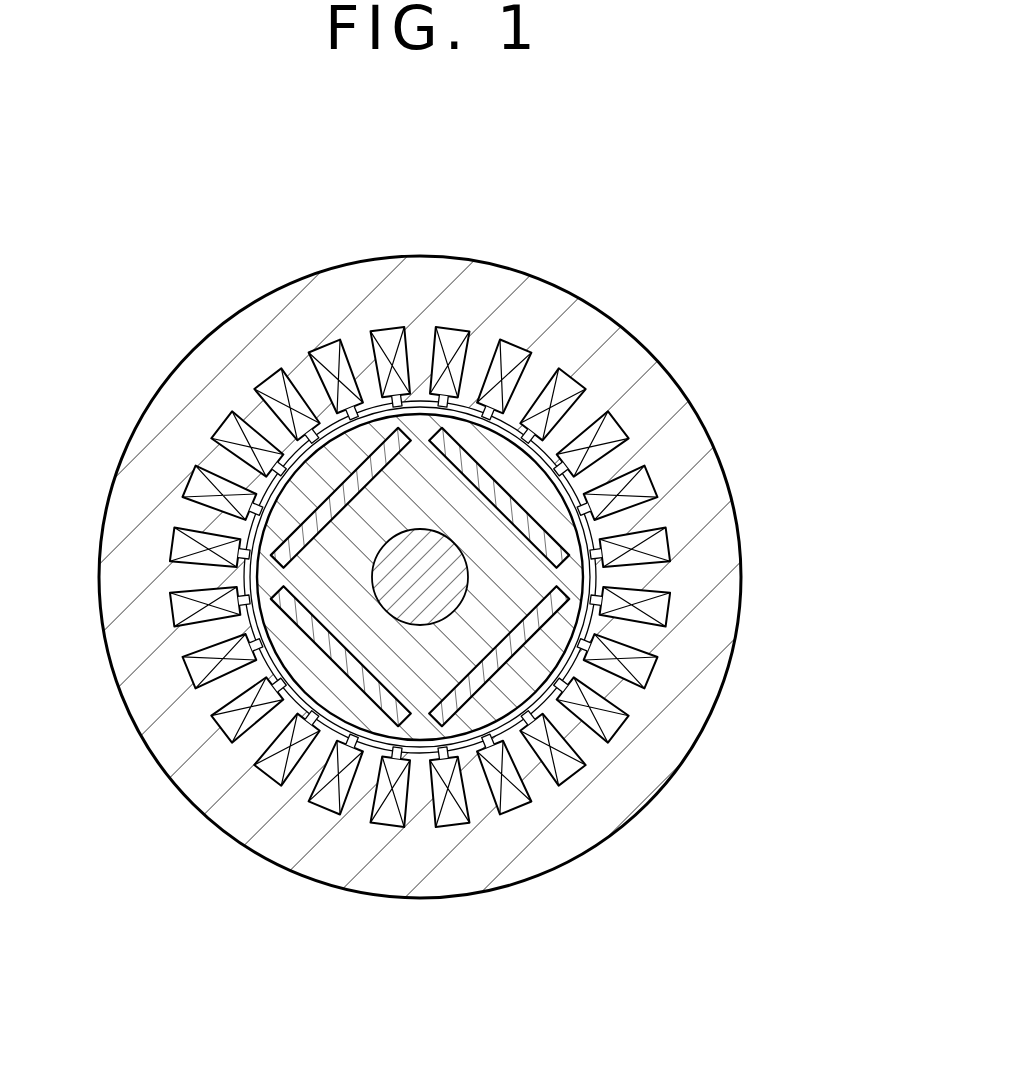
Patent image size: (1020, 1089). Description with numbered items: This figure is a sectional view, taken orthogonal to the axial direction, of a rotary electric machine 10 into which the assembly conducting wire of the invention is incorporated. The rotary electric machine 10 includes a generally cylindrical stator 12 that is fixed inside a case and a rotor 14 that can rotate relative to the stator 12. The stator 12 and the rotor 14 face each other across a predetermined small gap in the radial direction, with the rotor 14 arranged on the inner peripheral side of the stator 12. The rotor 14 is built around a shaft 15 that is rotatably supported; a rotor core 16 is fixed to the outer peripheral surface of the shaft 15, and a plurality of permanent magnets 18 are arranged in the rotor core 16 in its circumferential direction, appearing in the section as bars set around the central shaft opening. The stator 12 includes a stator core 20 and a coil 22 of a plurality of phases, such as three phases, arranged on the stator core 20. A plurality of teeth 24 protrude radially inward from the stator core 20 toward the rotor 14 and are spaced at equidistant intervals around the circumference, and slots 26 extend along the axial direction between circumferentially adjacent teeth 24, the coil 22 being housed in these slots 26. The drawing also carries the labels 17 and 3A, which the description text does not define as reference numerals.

The rotary electric machine (motor) 10 is at (456, 547).
The stator 12 is at (439, 534).
The rotor 14 is at (535, 680).
The shaft hole 15 is at (466, 563).
The rotor core 16 is at (545, 663).
The permanent magnets 17 is at (503, 720).
The air gap / stator inner peripheral surface 18 is at (510, 720).
The stator core 20 is at (478, 273).
The slots 22 is at (503, 348).
The coils 24 is at (598, 378).
The teeth 26 is at (562, 400).
The slot openings 3A is at (431, 323).